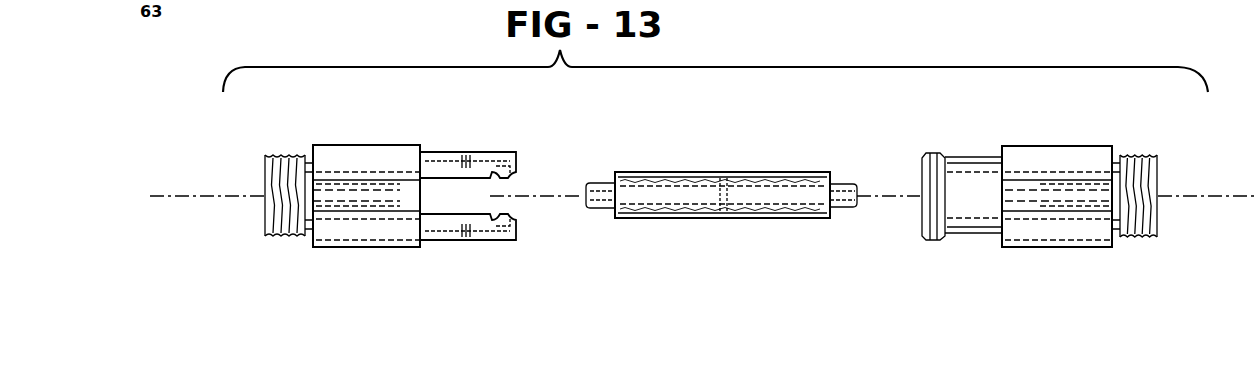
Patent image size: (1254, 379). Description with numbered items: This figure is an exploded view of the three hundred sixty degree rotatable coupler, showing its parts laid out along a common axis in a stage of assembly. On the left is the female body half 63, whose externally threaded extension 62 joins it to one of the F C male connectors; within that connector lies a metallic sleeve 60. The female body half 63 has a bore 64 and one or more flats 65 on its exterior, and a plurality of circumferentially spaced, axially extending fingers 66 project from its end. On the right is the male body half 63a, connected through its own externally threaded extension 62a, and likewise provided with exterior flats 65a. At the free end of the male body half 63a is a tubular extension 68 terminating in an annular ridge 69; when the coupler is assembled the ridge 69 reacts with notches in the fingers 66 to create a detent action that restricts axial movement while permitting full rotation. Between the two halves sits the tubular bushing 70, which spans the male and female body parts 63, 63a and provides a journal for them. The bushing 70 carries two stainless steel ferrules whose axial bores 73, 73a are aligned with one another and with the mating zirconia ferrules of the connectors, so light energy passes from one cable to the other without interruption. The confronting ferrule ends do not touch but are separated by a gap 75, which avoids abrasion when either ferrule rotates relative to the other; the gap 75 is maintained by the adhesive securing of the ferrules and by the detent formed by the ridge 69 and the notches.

The metallic sleeve 60 is at (372, 166).
The externally threaded extension 62 is at (268, 228).
The externally threaded extension 62a is at (1155, 218).
The female body half 63 is at (298, 146).
The male body half 63a is at (1124, 146).
The bore 64 is at (415, 183).
The flat 65 is at (395, 205).
The flat 65a is at (1012, 205).
The finger 66 is at (485, 238).
The tubular extension 68 is at (962, 157).
The annular ridge 69 is at (932, 153).
The tubular bushing 70 is at (740, 218).
The axial bore 73 is at (600, 183).
The axial bore 73a is at (838, 214).
The gap 75 is at (727, 172).